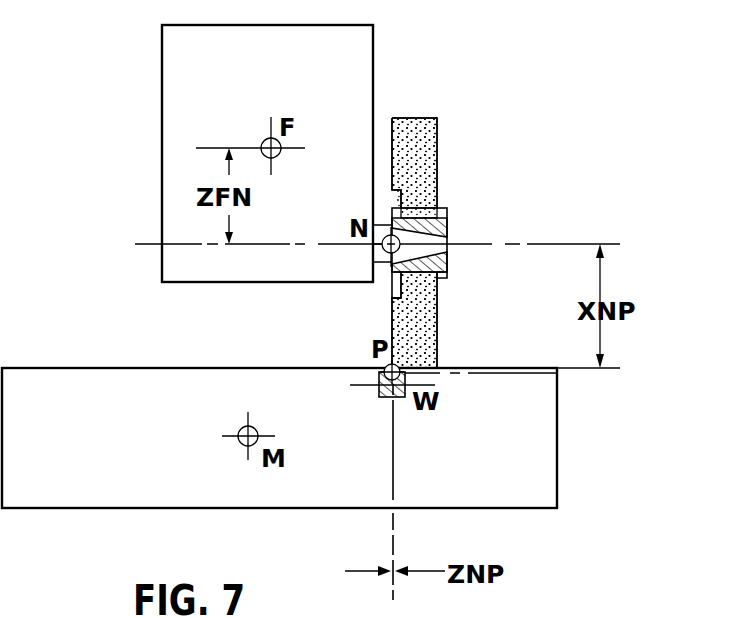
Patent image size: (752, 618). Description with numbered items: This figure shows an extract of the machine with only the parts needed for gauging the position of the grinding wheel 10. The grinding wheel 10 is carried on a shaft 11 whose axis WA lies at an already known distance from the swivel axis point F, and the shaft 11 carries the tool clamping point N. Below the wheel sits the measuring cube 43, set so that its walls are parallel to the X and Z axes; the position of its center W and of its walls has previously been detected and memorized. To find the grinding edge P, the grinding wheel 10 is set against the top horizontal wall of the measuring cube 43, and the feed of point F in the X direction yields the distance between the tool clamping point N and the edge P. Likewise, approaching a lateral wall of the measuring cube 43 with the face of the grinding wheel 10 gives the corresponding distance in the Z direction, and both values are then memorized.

The grinding wheel 10 is at (448, 156).
The shaft 11 is at (453, 237).
The measuring cube 43 is at (365, 383).
The axis of the shaft WA is at (147, 244).